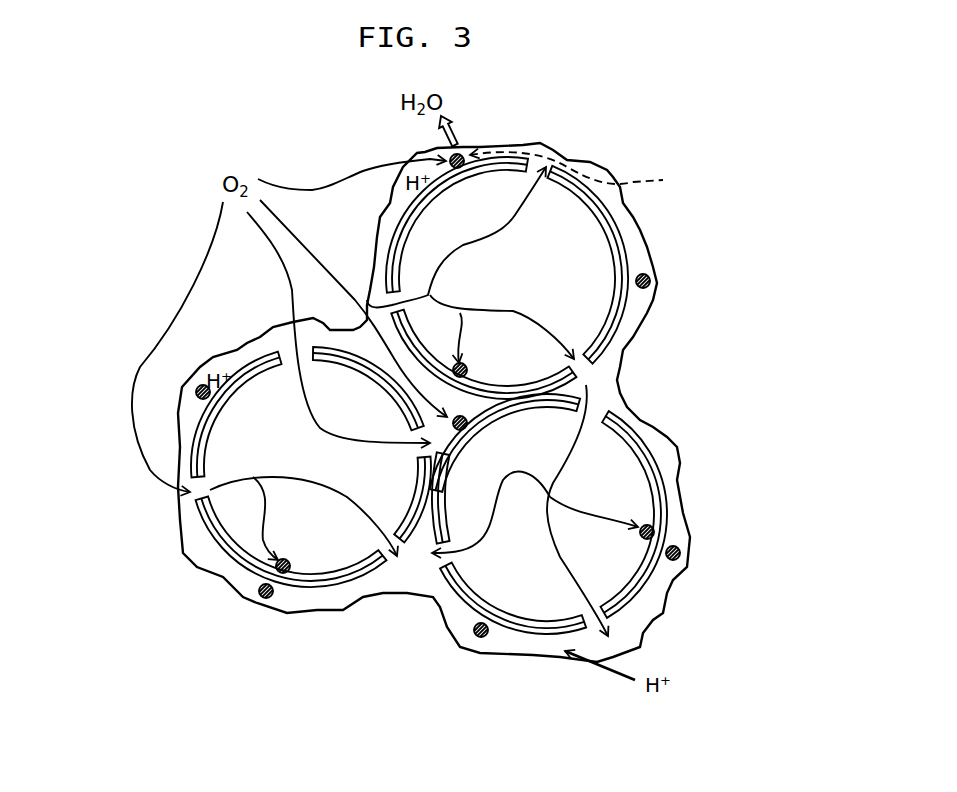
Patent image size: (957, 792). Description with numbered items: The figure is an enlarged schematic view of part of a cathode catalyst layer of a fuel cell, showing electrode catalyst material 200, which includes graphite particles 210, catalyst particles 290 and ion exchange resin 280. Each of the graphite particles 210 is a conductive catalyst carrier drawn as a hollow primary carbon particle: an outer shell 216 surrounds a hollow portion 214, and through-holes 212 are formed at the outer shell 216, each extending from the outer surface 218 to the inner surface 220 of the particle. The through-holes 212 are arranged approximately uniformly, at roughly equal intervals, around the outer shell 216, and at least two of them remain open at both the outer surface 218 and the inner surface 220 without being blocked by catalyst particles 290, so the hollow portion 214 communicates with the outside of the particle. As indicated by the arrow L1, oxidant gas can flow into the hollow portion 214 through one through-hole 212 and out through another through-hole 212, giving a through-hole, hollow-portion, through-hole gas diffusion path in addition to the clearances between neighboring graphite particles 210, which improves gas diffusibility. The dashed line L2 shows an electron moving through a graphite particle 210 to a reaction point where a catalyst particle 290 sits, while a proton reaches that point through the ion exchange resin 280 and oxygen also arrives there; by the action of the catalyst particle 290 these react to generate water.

The electrode catalyst material 200 is at (157, 247).
The graphite particles 210 is at (627, 316).
The through-holes 212 is at (425, 560).
The hollow portion 214 is at (607, 567).
The outer shell 216 is at (665, 483).
The outer surface 218 is at (440, 583).
The inner surface 220 is at (497, 624).
The ion exchange resin 280 is at (193, 545).
The catalyst particles 290 is at (650, 280).
The arrow L1 is at (318, 190).
The dashed line L2 is at (633, 182).